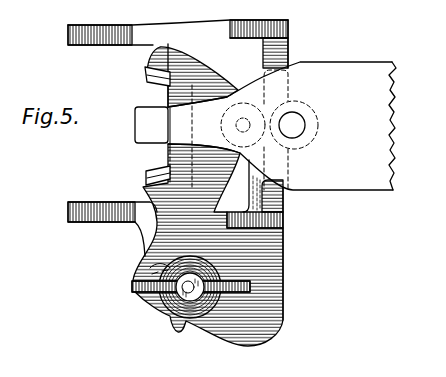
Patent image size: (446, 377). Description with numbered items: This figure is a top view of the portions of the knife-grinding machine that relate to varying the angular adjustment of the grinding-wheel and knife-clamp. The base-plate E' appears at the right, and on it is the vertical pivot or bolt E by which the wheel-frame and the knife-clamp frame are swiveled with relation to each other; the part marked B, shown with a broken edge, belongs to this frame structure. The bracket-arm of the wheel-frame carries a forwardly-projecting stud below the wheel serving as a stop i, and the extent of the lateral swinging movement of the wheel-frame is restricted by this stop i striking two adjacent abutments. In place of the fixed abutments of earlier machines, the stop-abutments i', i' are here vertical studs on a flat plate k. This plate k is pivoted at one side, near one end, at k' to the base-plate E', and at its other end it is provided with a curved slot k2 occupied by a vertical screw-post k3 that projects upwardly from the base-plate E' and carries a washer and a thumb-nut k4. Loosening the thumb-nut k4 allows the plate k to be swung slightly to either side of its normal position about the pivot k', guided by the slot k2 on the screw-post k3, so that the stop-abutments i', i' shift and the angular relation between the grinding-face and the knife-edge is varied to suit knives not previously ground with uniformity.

The bracket / casting body B is at (282, 126).
The vertical pivot or bolt E is at (294, 125).
The base-plate E' is at (262, 56).
The stop i is at (151, 125).
The stop-abutments i' is at (145, 128).
The flat plate k is at (208, 195).
The pivot k' is at (244, 119).
The curved slot k2 is at (152, 270).
The vertical screw-post k3 is at (189, 290).
The thumb-nut k4 is at (132, 287).